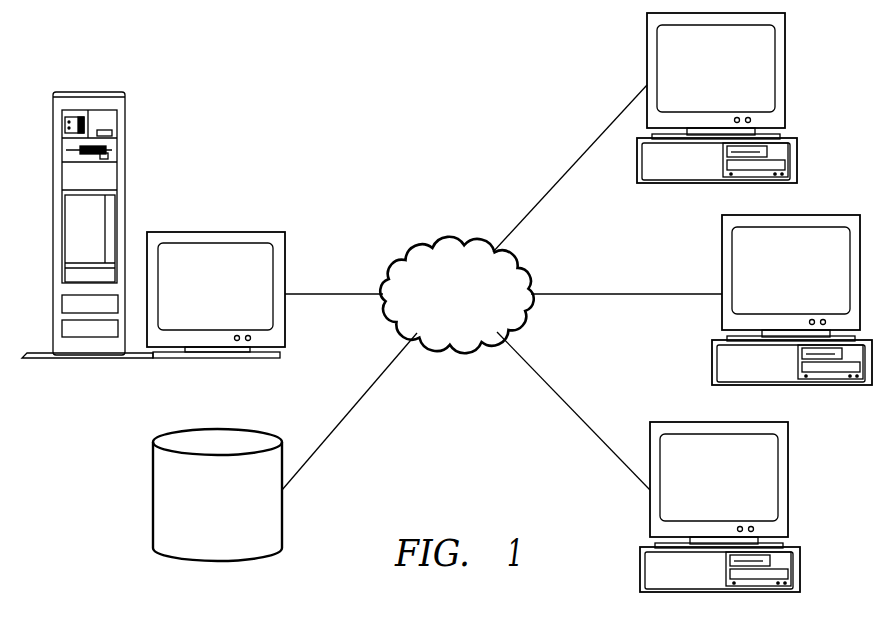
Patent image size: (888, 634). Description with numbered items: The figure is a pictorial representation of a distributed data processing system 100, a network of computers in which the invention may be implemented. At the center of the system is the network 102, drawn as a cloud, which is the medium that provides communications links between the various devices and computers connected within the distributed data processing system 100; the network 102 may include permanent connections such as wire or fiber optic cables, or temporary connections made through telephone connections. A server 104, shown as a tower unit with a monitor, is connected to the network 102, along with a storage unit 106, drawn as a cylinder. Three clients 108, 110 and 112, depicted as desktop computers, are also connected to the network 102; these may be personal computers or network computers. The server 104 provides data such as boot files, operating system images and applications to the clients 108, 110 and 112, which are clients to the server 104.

The distributed data processing system 100 is at (306, 89).
The network 102 is at (475, 306).
The server 104 is at (235, 298).
The storage unit 106 is at (238, 517).
The client 108 is at (735, 82).
The client 110 is at (811, 285).
The client 112 is at (738, 490).